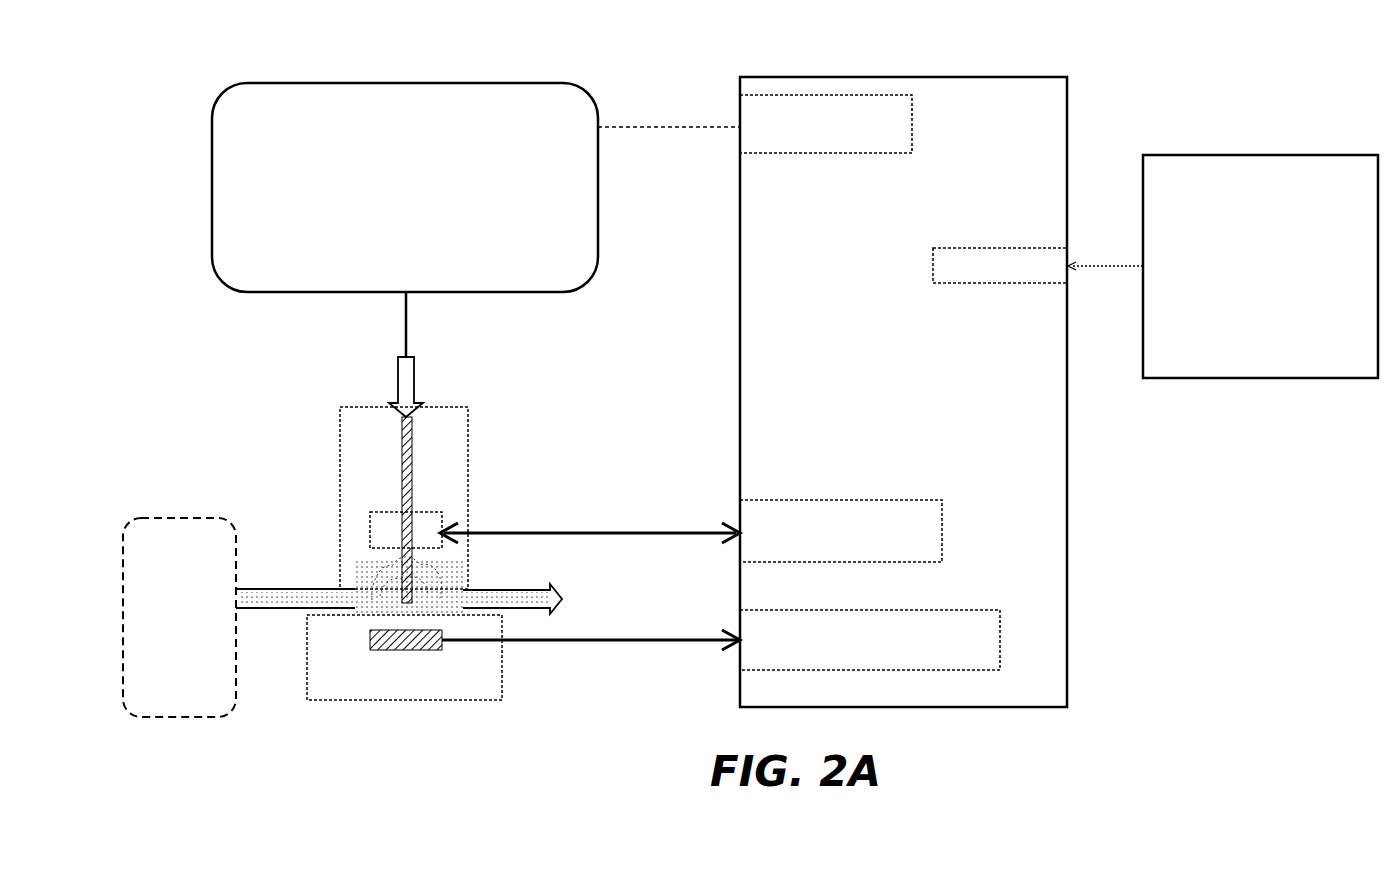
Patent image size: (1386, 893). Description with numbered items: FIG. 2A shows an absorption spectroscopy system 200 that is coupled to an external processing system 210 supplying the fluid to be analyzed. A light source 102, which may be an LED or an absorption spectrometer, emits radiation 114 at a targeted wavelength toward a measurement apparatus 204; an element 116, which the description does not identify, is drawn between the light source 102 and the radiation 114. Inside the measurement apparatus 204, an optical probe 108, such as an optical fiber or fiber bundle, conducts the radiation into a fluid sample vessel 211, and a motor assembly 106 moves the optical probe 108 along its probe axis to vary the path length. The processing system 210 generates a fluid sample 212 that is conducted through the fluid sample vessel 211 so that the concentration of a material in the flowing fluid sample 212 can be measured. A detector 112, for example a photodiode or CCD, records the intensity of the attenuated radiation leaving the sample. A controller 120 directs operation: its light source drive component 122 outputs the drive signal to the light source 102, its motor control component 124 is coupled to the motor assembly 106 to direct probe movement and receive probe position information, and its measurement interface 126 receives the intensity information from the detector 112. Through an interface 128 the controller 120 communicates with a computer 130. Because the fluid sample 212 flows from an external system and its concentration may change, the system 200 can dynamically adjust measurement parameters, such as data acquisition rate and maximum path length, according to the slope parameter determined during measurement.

The light source 102 is at (437, 84).
The radiation 114 is at (405, 375).
The sample transfer line 116 is at (410, 345).
The measurement apparatus 204 is at (340, 418).
The optical probe 108 is at (392, 461).
The motor assembly 106 is at (360, 532).
The fluid sample vessel 211 is at (378, 572).
The processing system 210 is at (236, 694).
The fluid sample 212 is at (523, 590).
The detector 112 is at (370, 640).
The controller 120 is at (871, 371).
The light source drive component 122 is at (798, 135).
The motor control component 124 is at (803, 546).
The measurement interface 126 is at (827, 655).
The interface 128 is at (982, 275).
The computer 130 is at (1243, 266).
The system 200 is at (673, 717).